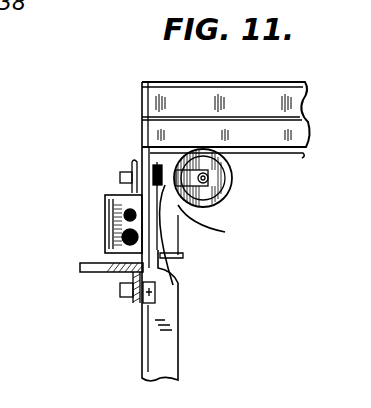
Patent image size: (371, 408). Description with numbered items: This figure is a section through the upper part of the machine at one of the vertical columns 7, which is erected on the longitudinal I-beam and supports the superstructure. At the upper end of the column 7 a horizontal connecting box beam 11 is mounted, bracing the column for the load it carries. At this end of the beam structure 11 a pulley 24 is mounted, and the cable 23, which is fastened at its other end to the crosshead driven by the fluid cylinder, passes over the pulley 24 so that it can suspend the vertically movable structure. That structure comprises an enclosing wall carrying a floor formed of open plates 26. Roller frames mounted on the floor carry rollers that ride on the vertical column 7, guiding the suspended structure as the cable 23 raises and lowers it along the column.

The horizontal connecting box beam 11 is at (283, 105).
The cable 23 is at (303, 154).
The pulley 24 is at (228, 188).
The vertical column 7 is at (163, 357).
The open plate 26 is at (90, 270).